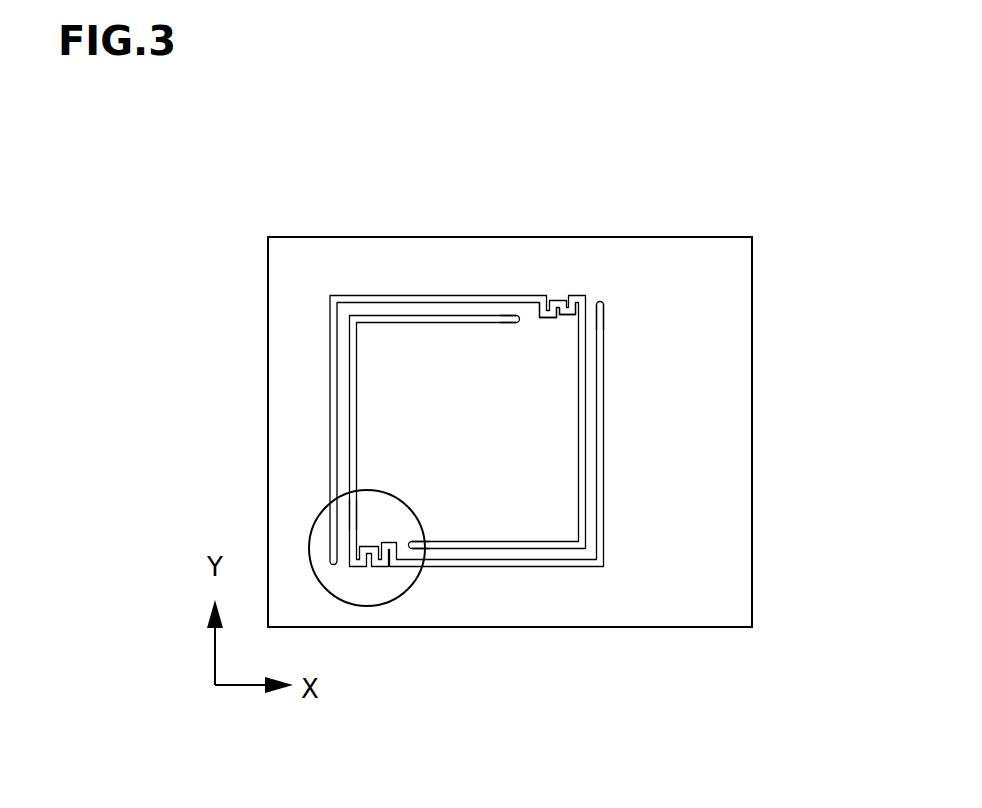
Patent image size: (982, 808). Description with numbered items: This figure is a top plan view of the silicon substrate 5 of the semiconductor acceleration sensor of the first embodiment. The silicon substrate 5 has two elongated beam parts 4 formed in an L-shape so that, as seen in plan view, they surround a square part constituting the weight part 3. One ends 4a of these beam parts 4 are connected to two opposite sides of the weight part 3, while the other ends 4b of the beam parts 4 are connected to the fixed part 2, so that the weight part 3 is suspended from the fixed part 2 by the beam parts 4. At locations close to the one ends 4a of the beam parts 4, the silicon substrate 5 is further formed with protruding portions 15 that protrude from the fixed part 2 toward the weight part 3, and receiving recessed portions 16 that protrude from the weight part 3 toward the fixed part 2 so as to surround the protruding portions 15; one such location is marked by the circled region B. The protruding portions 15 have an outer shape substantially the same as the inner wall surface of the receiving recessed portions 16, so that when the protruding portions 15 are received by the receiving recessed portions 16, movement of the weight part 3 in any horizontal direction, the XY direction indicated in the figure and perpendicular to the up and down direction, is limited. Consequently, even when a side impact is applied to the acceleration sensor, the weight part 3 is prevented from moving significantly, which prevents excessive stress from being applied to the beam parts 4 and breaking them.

The fixed part 2 is at (723, 572).
The weight part 3 is at (422, 343).
The beam parts 4 is at (343, 382).
The one ends of the beam parts 4a is at (507, 310).
The other ends of the beam parts 4b is at (606, 317).
The silicon substrate 5 is at (682, 124).
The protruding portions 15 is at (565, 303).
The receiving recessed portions 16 is at (565, 318).
The enlarged region B is at (375, 606).